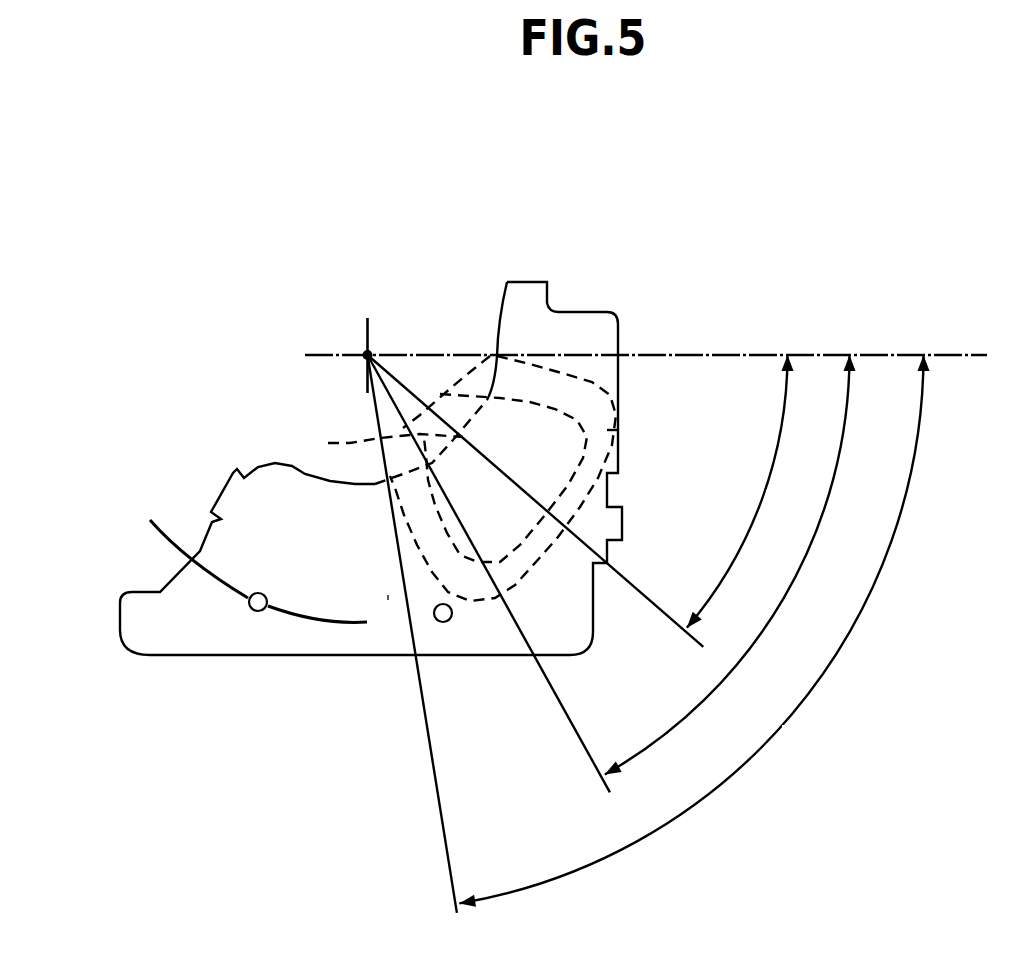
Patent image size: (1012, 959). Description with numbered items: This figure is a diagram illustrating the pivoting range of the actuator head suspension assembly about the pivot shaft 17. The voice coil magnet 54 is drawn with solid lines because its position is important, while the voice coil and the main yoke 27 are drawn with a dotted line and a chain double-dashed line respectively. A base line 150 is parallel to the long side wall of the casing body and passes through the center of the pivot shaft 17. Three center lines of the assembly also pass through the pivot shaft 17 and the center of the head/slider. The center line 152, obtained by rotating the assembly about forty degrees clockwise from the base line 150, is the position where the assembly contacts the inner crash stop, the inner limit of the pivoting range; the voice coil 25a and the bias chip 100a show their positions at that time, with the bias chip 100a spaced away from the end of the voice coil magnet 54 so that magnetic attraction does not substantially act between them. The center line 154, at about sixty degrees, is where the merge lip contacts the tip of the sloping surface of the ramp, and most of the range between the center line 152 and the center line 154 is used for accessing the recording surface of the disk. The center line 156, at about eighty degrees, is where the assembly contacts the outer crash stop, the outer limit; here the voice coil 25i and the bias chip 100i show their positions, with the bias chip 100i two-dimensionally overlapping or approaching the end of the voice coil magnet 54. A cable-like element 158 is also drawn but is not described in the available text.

The pivot shaft 17 is at (365, 353).
The voice coil 25a is at (445, 392).
The voice coil 25i is at (330, 442).
The main yoke 27 is at (577, 312).
The base line 150 is at (750, 355).
The center line 152 is at (648, 594).
The center line 154 is at (553, 685).
The center line 156 is at (437, 782).
The cable 158 is at (160, 532).
The voice coil magnet 54 is at (388, 596).
The bias chip 100i is at (256, 612).
The bias chip 100a is at (444, 622).